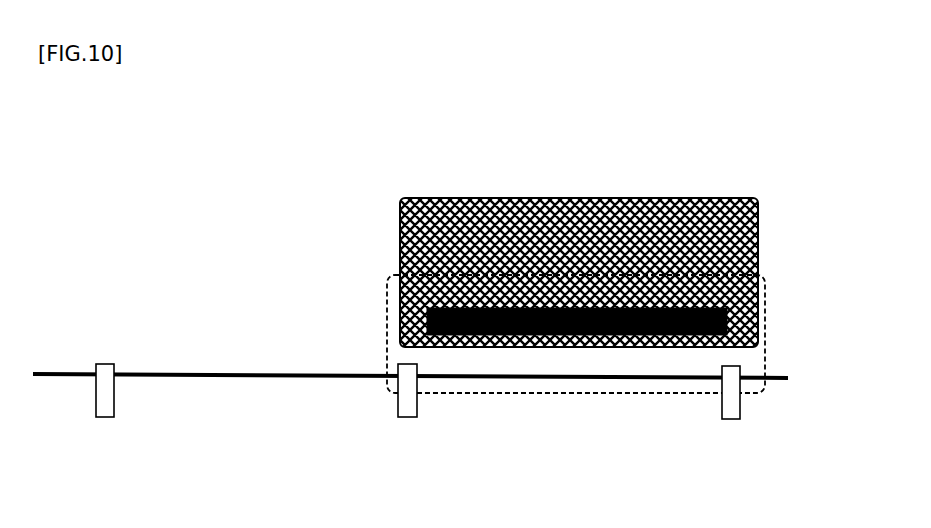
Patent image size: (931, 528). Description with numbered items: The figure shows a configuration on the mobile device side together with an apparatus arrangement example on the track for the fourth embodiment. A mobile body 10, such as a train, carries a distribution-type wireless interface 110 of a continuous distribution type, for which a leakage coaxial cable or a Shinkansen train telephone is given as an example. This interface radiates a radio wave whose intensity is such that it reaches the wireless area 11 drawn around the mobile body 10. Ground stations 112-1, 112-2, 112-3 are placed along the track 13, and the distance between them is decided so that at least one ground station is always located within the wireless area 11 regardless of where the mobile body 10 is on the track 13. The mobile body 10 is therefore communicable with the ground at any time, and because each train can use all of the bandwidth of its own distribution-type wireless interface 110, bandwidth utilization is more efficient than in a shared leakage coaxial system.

The mobile body 10 is at (580, 347).
The wireless area 11 is at (583, 270).
The distribution-type wireless interface 110 is at (458, 303).
The track 13 is at (257, 378).
The ground station on a track 112-1 is at (102, 417).
The ground station on a track 112-2 is at (410, 417).
The ground station on a track 112-3 is at (732, 419).